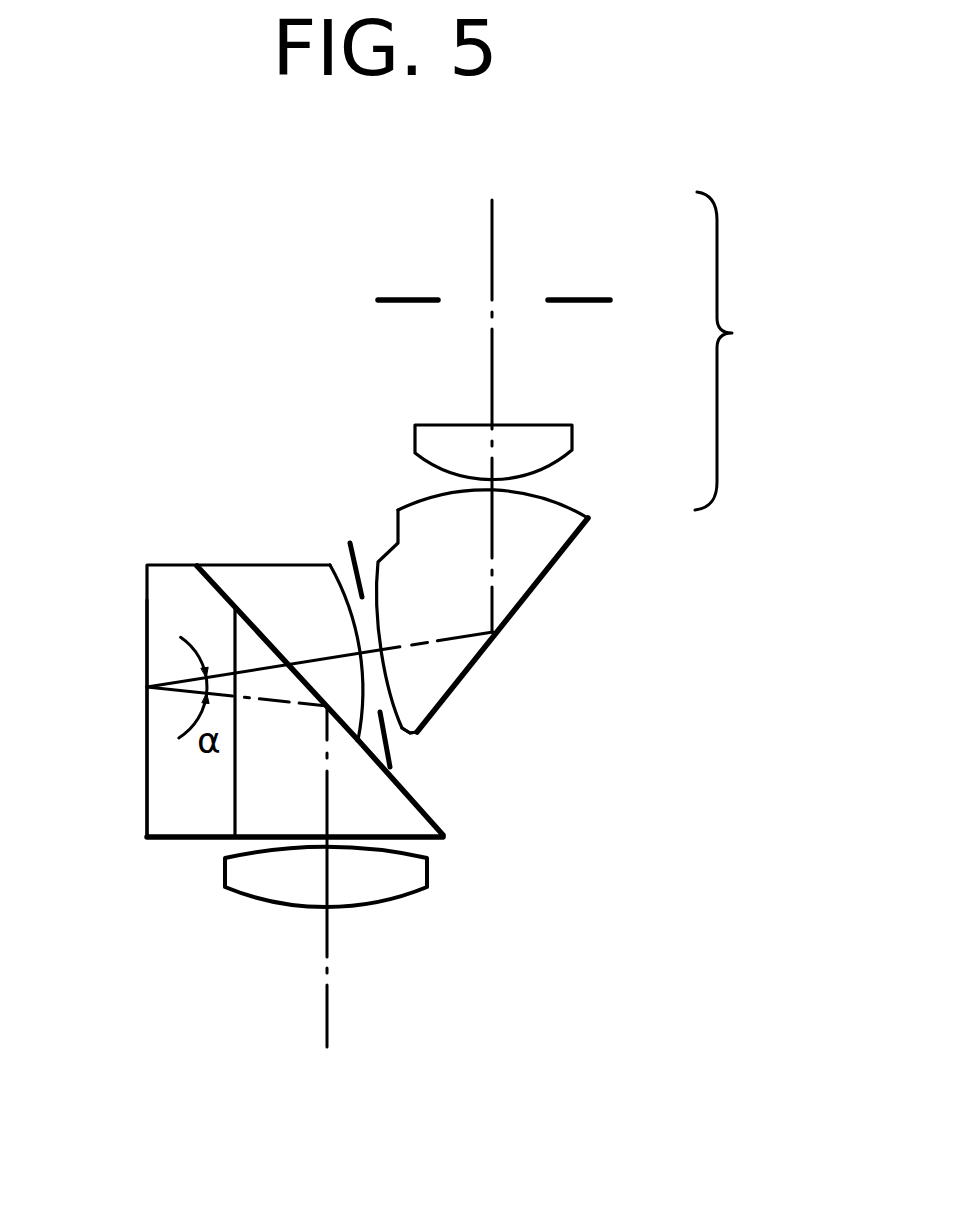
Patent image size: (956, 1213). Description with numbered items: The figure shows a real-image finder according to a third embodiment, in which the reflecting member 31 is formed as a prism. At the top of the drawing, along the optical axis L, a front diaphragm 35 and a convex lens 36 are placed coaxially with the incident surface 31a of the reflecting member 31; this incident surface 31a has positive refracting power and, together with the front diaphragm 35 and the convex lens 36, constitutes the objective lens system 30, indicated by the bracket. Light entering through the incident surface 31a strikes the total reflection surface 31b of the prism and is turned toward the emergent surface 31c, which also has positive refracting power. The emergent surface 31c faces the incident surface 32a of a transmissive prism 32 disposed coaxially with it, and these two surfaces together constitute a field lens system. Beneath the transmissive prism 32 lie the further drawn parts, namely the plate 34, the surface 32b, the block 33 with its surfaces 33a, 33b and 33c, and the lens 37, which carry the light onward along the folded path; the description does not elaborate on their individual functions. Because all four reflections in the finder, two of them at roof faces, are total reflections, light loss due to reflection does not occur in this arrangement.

The optical axis L is at (492, 228).
The objective lens system 30 is at (742, 351).
The reflecting member 31 is at (528, 550).
The incident surface 31a is at (568, 498).
The total reflection surface 31b is at (522, 602).
The emergent surface 31c is at (398, 735).
The transmissive prism 32 is at (277, 582).
The incident surface of transmissive prism 32a is at (343, 590).
The reflecting surface 32b is at (228, 590).
The prism block 33 is at (190, 822).
The inclined surface of prism block 33a is at (425, 808).
The side surface of prism block 33b is at (146, 822).
The exit surface of prism block 33c is at (430, 837).
The plate 34 is at (360, 548).
The front diaphragm 35 is at (580, 300).
The convex lens 36 is at (545, 443).
The lens 37 is at (377, 893).